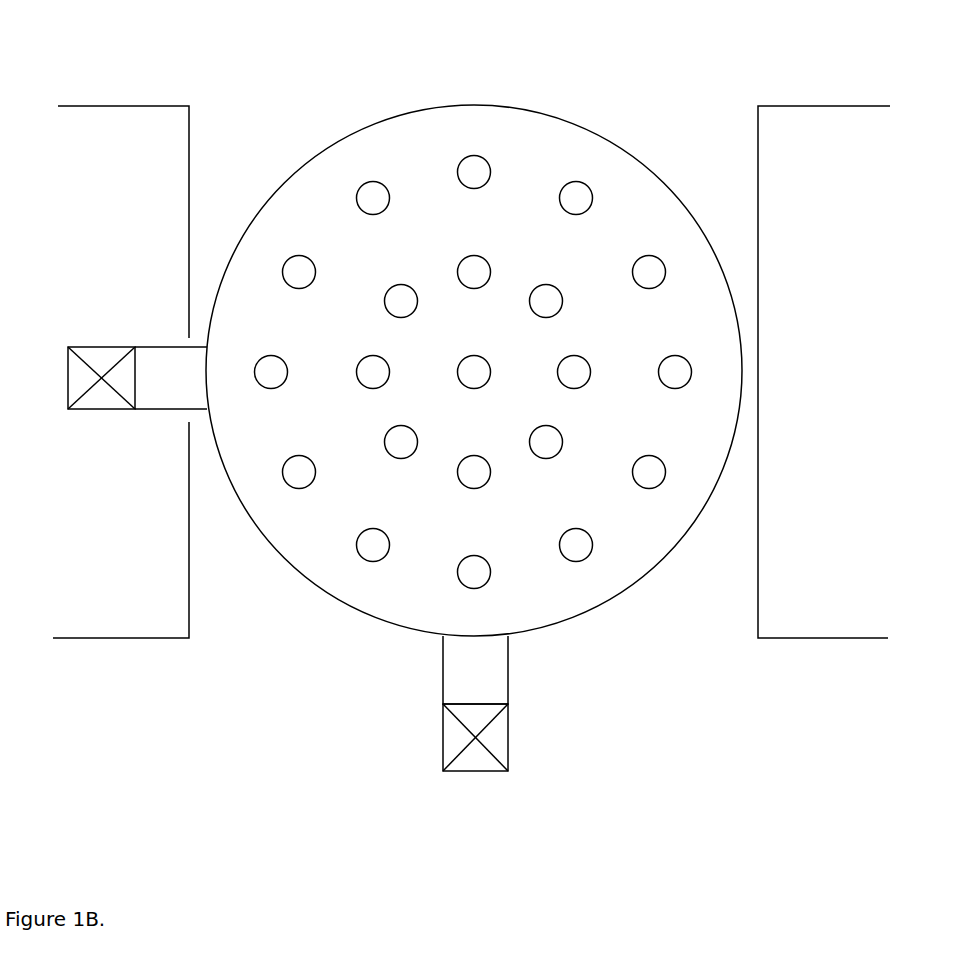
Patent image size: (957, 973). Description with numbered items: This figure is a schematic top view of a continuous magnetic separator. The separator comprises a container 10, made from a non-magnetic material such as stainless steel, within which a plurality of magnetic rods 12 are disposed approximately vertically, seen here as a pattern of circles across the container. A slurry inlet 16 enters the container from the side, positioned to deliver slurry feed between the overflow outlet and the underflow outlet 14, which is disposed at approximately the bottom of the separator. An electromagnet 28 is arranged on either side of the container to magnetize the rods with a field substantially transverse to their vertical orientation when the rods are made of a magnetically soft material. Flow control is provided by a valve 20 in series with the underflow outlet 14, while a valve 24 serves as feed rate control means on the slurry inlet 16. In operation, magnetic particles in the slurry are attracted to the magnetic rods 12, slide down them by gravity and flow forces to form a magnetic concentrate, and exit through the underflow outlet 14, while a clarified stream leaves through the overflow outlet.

The container 10 is at (665, 563).
The magnetic rod 12 is at (363, 185).
The underflow outlet 14 is at (515, 660).
The slurry inlet 16 is at (162, 412).
The valve 20 is at (518, 737).
The valve 24 is at (99, 412).
The electromagnet 28 is at (126, 102).